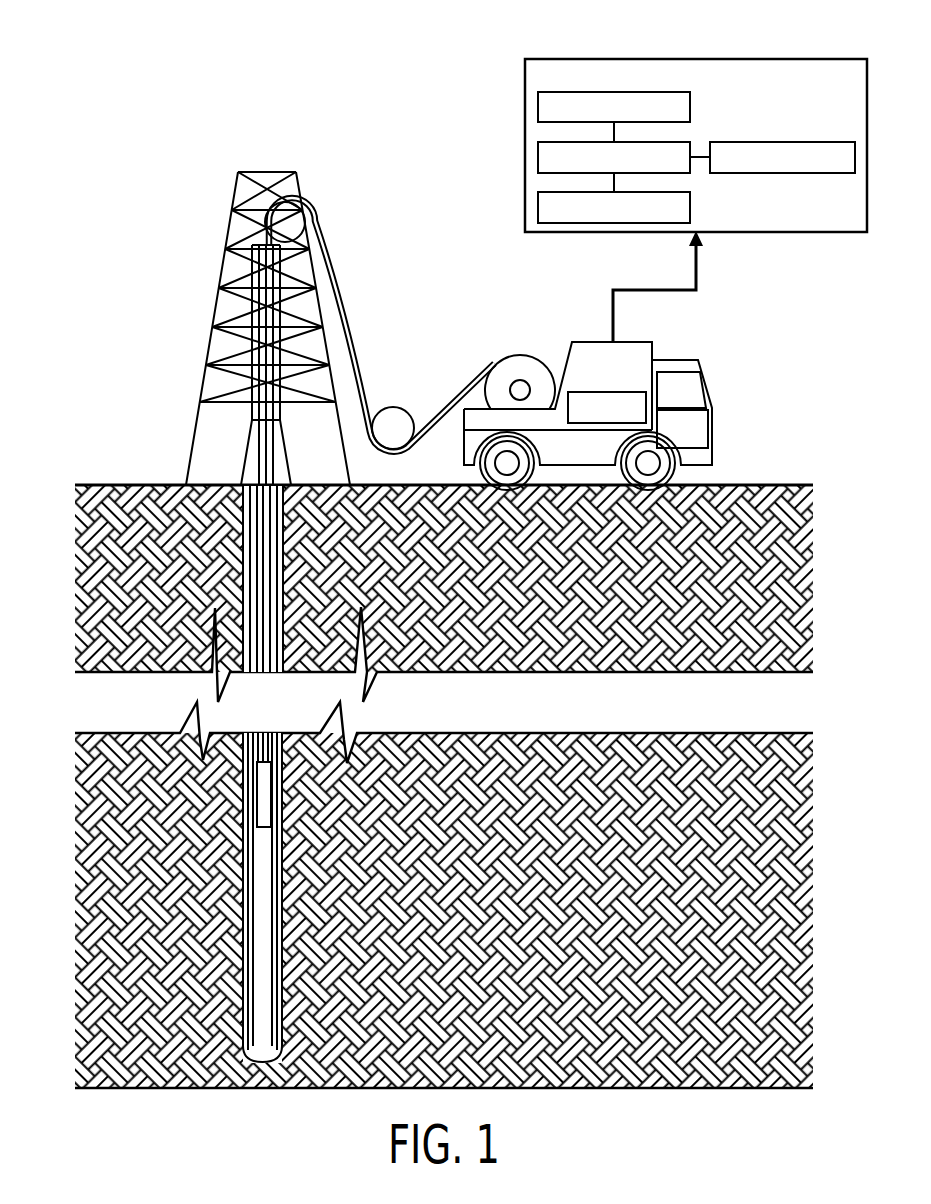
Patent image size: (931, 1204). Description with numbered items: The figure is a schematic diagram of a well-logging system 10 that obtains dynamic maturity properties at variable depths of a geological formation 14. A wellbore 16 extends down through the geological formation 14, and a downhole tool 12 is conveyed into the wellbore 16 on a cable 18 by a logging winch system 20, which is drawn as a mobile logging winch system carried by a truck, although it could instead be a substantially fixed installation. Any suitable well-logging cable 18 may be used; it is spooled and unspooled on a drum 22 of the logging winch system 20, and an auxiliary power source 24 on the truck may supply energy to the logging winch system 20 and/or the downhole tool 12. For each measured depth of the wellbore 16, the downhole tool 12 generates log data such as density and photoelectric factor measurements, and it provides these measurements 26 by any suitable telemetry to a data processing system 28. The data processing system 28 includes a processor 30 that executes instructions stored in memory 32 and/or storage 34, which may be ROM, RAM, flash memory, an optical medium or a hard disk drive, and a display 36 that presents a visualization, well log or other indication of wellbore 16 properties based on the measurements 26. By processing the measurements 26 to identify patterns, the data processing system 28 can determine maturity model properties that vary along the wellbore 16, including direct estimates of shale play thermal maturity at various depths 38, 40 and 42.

The well-logging system 10 is at (161, 234).
The downhole tool 12 is at (247, 772).
The geological formation 14 is at (92, 843).
The wellbore 16 is at (237, 544).
The cable 18 is at (348, 320).
The logging winch system 20 is at (587, 341).
The drum 22 is at (507, 360).
The auxiliary power source 24 is at (605, 392).
The measurements 26 is at (698, 258).
The data processing system 28 is at (698, 61).
The processor 30 is at (670, 141).
The memory 32 is at (540, 105).
The storage 34 is at (690, 205).
The display 36 is at (782, 141).
The depth 38 is at (250, 827).
The depth 40 is at (248, 975).
The depth 42 is at (243, 1042).